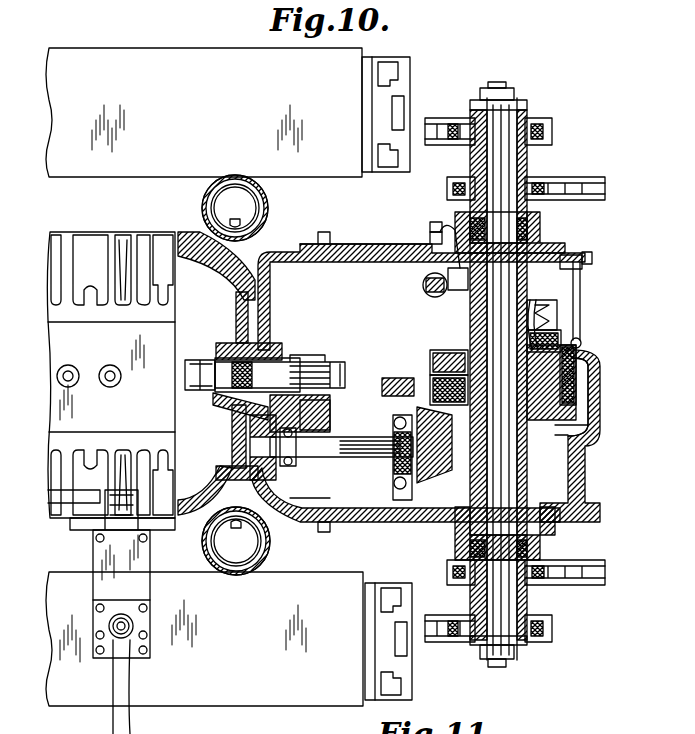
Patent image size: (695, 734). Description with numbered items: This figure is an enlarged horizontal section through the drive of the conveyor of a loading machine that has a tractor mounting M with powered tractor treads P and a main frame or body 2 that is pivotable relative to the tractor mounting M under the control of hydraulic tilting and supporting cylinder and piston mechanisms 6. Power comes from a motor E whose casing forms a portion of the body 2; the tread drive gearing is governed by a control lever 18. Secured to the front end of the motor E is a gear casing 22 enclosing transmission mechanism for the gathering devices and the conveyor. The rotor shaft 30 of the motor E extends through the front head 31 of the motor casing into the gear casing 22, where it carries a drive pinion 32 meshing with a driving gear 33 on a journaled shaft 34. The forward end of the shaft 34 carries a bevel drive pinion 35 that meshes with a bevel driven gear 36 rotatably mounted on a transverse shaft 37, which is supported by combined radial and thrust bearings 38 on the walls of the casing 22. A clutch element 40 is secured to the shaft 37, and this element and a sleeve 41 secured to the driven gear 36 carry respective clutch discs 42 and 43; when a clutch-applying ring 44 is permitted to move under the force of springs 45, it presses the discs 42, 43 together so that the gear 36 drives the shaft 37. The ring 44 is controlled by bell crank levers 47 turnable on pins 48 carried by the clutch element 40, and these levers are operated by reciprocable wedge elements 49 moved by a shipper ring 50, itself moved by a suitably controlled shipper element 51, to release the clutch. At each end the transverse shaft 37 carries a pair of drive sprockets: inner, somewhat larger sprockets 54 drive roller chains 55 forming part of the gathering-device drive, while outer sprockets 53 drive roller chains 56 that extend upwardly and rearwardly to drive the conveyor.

The tractor mounting M is at (163, 55).
The tractor treads P is at (402, 80).
The hydraulic tilting and supporting cylinder and piston mechanisms 6 is at (266, 210).
The motor E is at (58, 410).
The main frame or body 2 is at (62, 275).
The control lever 18 is at (130, 708).
The gear casing 22 is at (590, 470).
The rotor shaft 30 is at (197, 372).
The front head 31 is at (258, 340).
The drive pinion 32 is at (300, 356).
The driving gear 33 is at (318, 410).
The shaft 34 is at (370, 458).
The bevel drive pinion 35 is at (440, 465).
The bevel driven gear 36 is at (600, 412).
The transverse shaft 37 is at (508, 495).
The combined radial and thrust bearings 38 is at (542, 228).
The clutch element 40 is at (568, 352).
The sleeve 41 is at (600, 380).
The clutch discs 42 is at (445, 380).
The clutch discs 43 is at (436, 366).
The clutch-applying ring 44 is at (560, 330).
The springs 45 is at (548, 318).
The bell crank levers 47 is at (576, 300).
The pins 48 is at (528, 305).
The reciprocable wedge elements 49 is at (572, 258).
The shipper ring 50 is at (462, 270).
The shipper element 51 is at (424, 280).
The outer sprockets 53 is at (535, 122).
The inner sprockets 54 is at (530, 178).
The roller chains 55 is at (598, 178).
The roller chains 56 is at (450, 125).